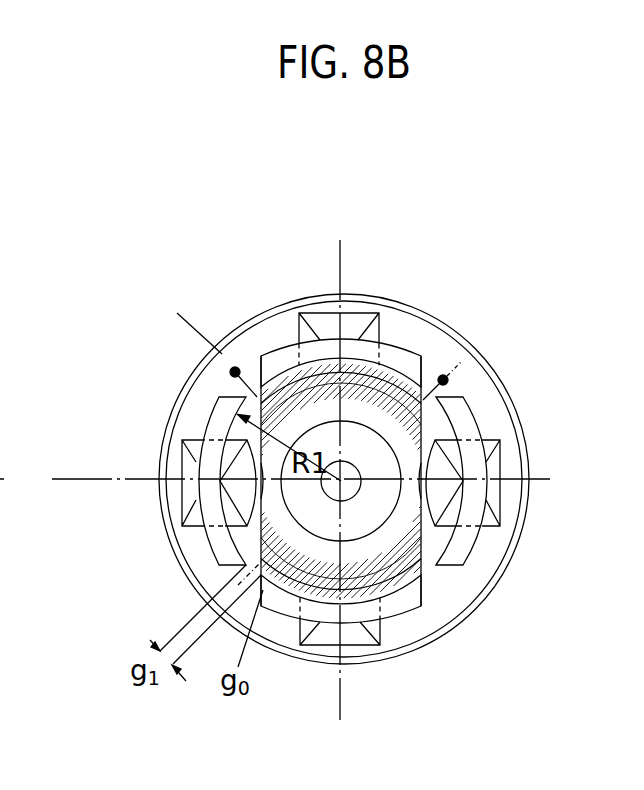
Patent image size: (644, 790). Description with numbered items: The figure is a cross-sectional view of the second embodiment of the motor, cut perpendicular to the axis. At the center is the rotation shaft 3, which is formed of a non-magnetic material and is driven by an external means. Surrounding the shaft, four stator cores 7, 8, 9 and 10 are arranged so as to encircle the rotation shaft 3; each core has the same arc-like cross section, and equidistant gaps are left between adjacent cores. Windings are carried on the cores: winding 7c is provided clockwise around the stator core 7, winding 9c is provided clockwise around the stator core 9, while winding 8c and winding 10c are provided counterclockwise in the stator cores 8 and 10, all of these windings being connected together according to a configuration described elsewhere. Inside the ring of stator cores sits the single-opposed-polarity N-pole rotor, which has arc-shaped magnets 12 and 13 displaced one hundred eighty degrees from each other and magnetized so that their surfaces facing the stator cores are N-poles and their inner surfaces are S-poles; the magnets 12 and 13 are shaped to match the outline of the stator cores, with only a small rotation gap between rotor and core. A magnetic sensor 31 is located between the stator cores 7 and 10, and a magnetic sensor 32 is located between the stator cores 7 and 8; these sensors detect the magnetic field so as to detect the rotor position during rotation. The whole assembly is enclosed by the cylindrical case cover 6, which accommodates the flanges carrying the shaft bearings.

The rotation shaft 3 is at (344, 500).
The cylindrical case cover 6 is at (516, 545).
The stator core 7 is at (384, 346).
The winding 7c is at (352, 316).
The stator core 8 is at (469, 423).
The winding 8c is at (496, 470).
The stator core 9 is at (400, 614).
The winding 9c is at (358, 648).
The stator core 10 is at (227, 410).
The winding 10c is at (181, 447).
The arc-shaped magnet 12 is at (365, 387).
The arc-shaped magnet 13 is at (421, 574).
The magnetic sensor 31 is at (236, 368).
The magnetic sensor 32 is at (447, 377).